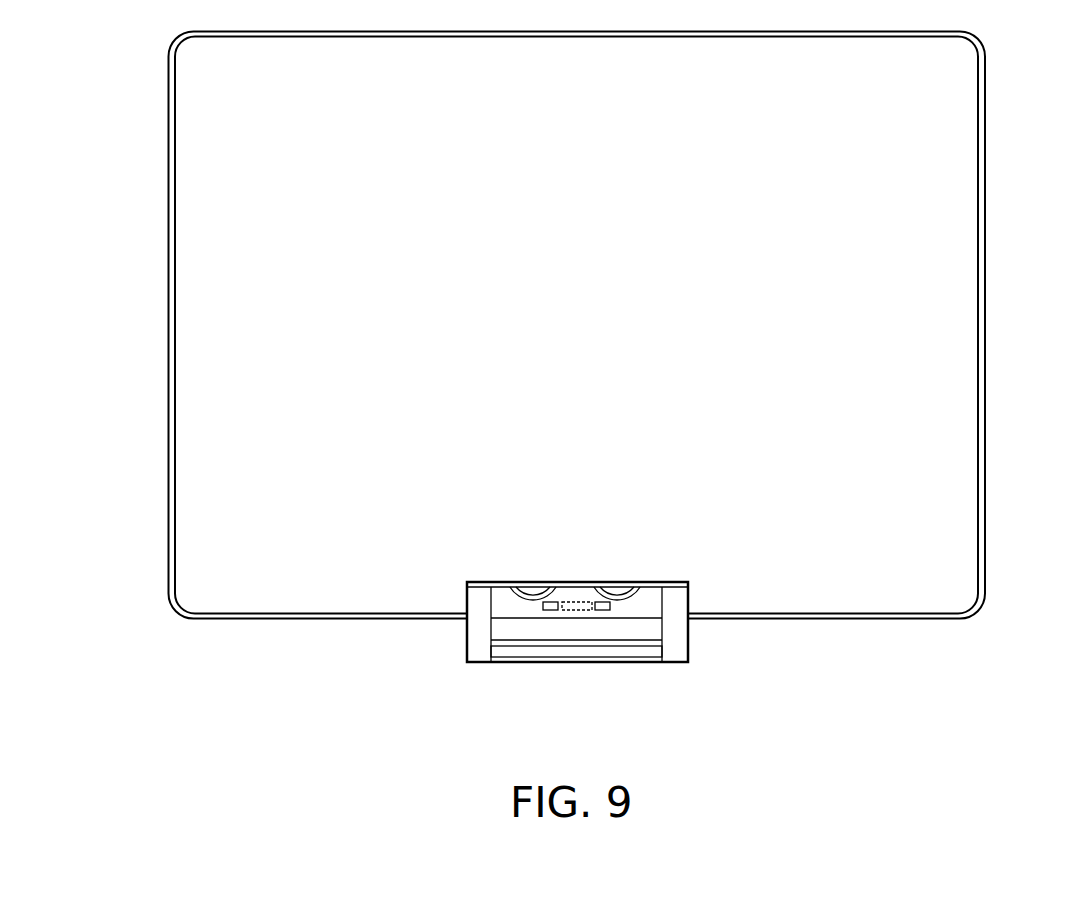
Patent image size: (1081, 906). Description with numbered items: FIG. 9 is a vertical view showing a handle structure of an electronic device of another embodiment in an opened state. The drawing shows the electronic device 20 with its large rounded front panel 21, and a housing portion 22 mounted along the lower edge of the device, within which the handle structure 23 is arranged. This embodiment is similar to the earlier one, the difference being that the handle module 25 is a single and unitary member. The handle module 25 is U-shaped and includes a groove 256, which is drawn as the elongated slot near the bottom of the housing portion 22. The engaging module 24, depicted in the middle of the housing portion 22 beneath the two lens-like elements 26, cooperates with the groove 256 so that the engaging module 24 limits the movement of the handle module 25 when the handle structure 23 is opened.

The electronic device 20 is at (1064, 55).
The display panel 21 is at (924, 113).
The housing 22 is at (502, 618).
The camera module 23 is at (688, 724).
The engaging module 24 is at (575, 612).
The handle module 25 is at (636, 664).
The lens 26 is at (618, 598).
The groove 256 is at (522, 657).